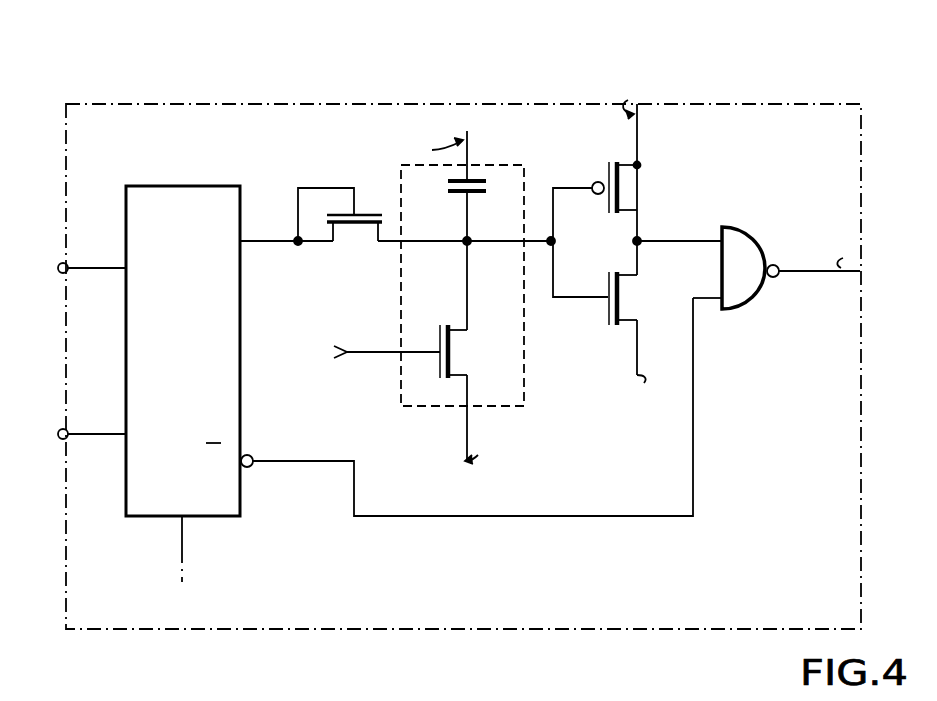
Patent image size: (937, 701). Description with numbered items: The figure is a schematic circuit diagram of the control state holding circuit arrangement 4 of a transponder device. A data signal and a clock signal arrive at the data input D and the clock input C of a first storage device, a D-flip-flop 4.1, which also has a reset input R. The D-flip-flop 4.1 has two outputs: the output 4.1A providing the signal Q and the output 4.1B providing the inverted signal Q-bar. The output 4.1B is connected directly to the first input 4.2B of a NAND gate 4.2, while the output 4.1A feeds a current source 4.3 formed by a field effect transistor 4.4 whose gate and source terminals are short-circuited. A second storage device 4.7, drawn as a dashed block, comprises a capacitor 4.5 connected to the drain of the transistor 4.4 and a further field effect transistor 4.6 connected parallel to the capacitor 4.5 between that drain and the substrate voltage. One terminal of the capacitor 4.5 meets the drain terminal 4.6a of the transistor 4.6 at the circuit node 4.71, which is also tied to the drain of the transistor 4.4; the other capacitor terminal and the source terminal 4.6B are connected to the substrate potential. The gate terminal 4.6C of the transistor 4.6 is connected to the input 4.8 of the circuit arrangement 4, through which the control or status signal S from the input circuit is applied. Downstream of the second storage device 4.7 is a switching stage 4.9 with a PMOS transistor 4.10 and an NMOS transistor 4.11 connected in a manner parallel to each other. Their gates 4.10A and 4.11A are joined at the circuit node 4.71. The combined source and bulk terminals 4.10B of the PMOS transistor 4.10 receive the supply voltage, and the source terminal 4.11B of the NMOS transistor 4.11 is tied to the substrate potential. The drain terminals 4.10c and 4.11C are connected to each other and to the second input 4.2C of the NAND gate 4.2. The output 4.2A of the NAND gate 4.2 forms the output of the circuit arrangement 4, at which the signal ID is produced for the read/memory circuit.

The control state holding circuit arrangement 4 is at (153, 104).
The D-flip-flop 4.1 is at (180, 186).
The output of the D-flip-flop 4.1A is at (246, 245).
The output of the D-flip-flop 4.1B is at (252, 468).
The NAND gate 4.2 is at (753, 267).
The output of the NAND gate 4.2A is at (781, 277).
The first input of the NAND gate 4.2B is at (722, 310).
The second input of the NAND gate 4.2C is at (721, 228).
The current source 4.3 is at (359, 215).
The field effect transistor 4.4 is at (358, 227).
The capacitor 4.5 is at (447, 184).
The field effect transistor 4.6 is at (506, 362).
The drain terminal of the transistor 4.6a is at (473, 330).
The source terminal of the transistor 4.6B is at (474, 379).
The gate terminal of the transistor 4.6C is at (436, 338).
The second storage device 4.7 is at (402, 410).
The circuit node 4.71 is at (471, 248).
The input of the circuit arrangement 4.8 is at (356, 357).
The switching stage 4.9 is at (674, 232).
The PMOS transistor 4.10 is at (639, 142).
The gate of the PMOS transistor 4.10A is at (590, 180).
The source and bulk terminals of the PMOS transistor 4.10B is at (643, 184).
The drain terminal of the PMOS transistor 4.10c is at (647, 210).
The NMOS transistor 4.11 is at (676, 328).
The gate of the NMOS transistor 4.11A is at (581, 283).
The source terminal of the NMOS transistor 4.11B is at (691, 370).
The drain terminal of the NMOS transistor 4.11C is at (661, 264).